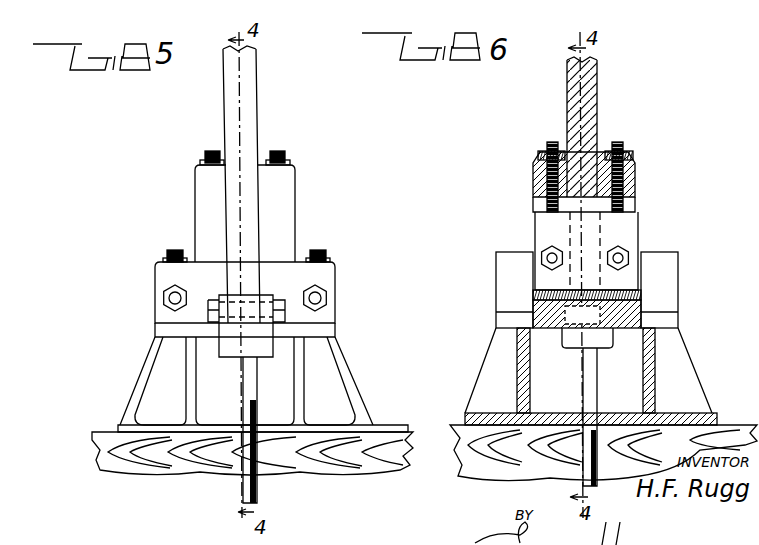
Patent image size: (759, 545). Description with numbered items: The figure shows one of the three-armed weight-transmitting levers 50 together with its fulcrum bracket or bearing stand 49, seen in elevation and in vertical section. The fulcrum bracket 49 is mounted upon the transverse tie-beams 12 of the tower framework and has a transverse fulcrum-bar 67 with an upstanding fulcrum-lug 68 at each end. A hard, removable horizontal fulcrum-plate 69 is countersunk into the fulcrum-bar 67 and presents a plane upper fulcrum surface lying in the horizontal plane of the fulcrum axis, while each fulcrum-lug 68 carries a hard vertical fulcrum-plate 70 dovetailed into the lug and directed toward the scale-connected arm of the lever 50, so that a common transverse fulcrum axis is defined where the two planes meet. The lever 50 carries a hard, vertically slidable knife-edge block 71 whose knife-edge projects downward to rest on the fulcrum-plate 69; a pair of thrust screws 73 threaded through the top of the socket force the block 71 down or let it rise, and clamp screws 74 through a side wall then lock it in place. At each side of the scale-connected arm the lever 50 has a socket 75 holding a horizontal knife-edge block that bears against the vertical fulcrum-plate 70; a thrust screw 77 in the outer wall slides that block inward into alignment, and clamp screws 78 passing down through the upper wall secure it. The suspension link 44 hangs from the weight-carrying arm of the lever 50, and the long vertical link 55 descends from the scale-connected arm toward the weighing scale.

In FIG. 5, the transverse tie-beams 12 is at (373, 464).
In FIG. 6, the transverse tie-beams 12 is at (513, 465).
In FIG. 6, the suspension link 44 is at (597, 480).
In FIG. 5, the fulcrum bracket 49 is at (340, 367).
In FIG. 6, the fulcrum bracket 49 is at (680, 357).
In FIG. 5, the three-armed lever 50 is at (257, 216).
In FIG. 6, the three-armed lever 50 is at (592, 97).
In FIG. 5, the long vertical link 55 is at (258, 493).
In FIG. 6, the fulcrum-bar 67 is at (548, 328).
In FIG. 5, the fulcrum-lug 68 is at (283, 190).
In FIG. 6, the fulcrum-lug 68 is at (584, 182).
In FIG. 6, the horizontal fulcrum-plate 69 is at (533, 290).
In FIG. 6, the vertical fulcrum-plate 70 is at (497, 278).
In FIG. 6, the knife-edge block 71 is at (543, 232).
In FIG. 5, the thrust screws 73 is at (212, 151).
In FIG. 6, the thrust screws 73 is at (548, 146).
In FIG. 6, the clamp screws 74 is at (540, 250).
In FIG. 5, the sockets 75 is at (160, 270).
In FIG. 5, the thrust screw 77 is at (168, 299).
In FIG. 5, the clamp screws 78 is at (168, 251).